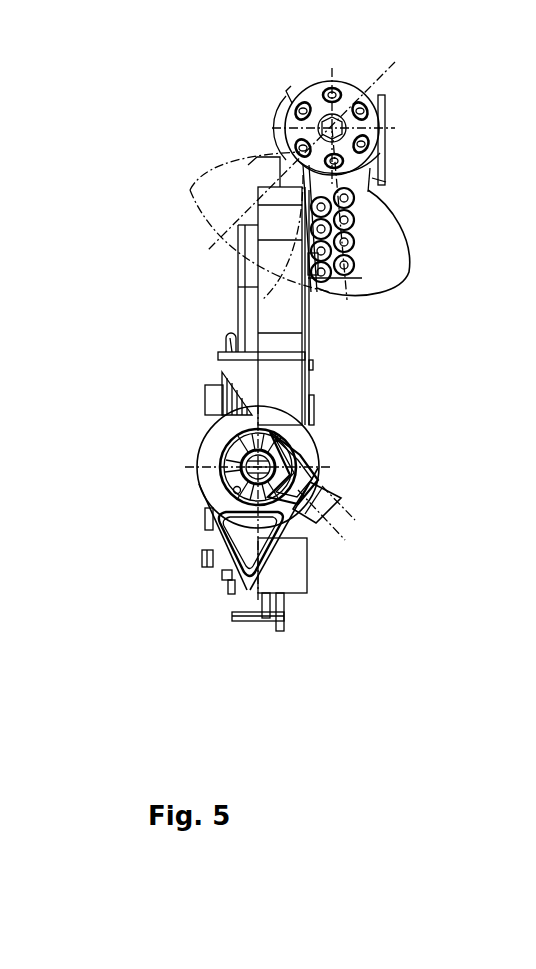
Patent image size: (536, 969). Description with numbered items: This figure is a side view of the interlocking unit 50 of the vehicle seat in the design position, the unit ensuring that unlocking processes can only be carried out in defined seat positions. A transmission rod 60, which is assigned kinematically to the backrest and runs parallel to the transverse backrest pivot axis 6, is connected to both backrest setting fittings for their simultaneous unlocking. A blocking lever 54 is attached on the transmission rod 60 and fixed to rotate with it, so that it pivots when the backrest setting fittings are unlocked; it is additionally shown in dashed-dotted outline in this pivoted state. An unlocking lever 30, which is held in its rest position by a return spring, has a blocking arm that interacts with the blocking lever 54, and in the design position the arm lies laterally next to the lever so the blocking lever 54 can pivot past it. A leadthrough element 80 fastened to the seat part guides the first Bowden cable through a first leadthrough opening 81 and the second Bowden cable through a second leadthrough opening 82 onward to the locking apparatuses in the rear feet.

The transmission rod 60 is at (332, 128).
The interlocking unit 50 is at (410, 86).
The blocking lever 54 is at (387, 215).
The unlocking lever 30 is at (273, 304).
The backrest pivot axis 6 is at (262, 471).
The first leadthrough opening 81 is at (236, 492).
The second leadthrough opening 82 is at (278, 438).
The leadthrough element 80 is at (250, 538).